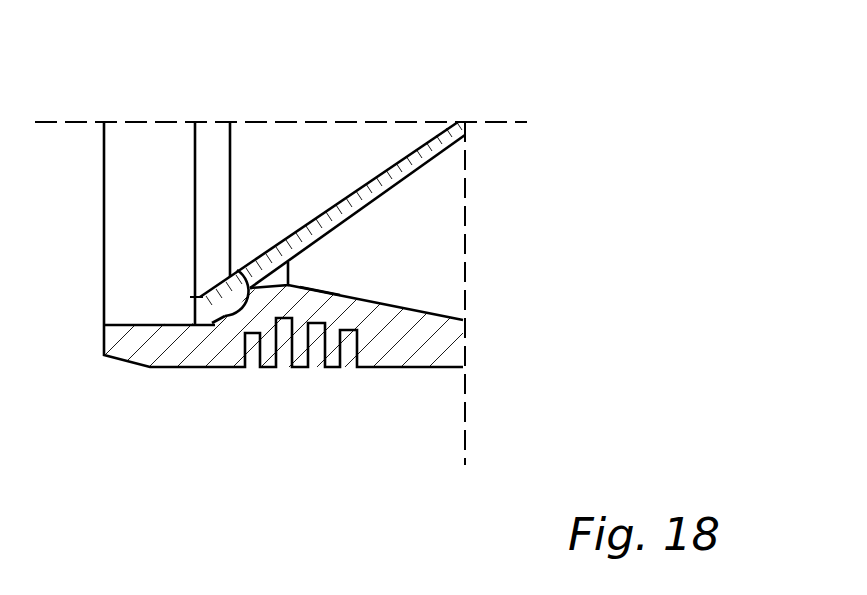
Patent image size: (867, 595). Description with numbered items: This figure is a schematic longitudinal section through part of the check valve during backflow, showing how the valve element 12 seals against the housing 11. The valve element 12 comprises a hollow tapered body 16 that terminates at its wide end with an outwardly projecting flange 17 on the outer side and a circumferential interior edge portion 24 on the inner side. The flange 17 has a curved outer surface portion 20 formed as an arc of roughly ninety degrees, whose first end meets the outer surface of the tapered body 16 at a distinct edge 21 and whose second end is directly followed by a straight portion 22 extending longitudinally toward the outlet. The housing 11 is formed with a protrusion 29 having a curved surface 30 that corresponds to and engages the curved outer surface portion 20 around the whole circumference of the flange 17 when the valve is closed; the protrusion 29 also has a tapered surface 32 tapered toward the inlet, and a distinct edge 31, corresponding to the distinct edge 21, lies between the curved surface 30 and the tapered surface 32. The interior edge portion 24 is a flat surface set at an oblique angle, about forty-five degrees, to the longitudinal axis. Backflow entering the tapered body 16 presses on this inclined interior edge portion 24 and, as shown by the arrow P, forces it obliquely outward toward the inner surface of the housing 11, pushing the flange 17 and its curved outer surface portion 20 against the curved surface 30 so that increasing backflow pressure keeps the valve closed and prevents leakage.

The housing 11 is at (406, 352).
The valve element 12 is at (303, 136).
The tapered body 16 is at (445, 131).
The flange 17 is at (223, 287).
The curved outer surface portion 20 is at (210, 307).
The distinct edge 21 is at (248, 288).
The straight portion 22 is at (200, 327).
The interior edge portion 24 is at (210, 297).
The protrusion 29 is at (312, 303).
The curved surface 30 is at (238, 325).
The distinct edge 31 is at (240, 265).
The tapered surface 32 is at (452, 268).
The arrow P is at (212, 297).